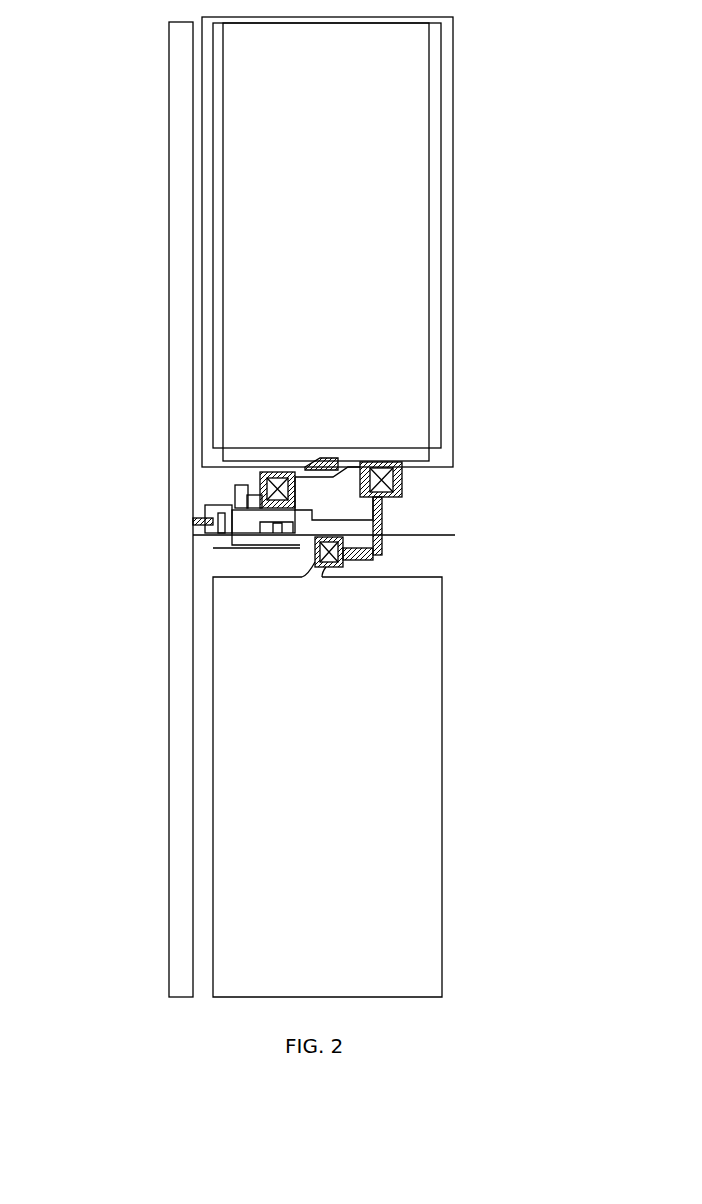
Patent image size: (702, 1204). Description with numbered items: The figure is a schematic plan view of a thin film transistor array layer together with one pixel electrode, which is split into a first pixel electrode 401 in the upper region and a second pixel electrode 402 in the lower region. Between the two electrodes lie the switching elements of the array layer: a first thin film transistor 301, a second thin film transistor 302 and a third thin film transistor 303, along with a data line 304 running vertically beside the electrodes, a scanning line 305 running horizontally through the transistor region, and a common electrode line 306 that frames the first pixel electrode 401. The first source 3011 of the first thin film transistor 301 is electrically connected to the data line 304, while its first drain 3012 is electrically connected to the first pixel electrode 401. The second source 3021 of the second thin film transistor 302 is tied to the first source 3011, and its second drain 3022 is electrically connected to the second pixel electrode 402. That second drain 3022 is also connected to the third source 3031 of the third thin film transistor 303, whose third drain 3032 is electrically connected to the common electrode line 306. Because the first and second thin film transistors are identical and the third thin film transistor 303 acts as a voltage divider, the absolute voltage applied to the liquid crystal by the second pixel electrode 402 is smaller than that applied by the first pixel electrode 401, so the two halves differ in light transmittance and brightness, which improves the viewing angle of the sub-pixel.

The first thin film transistor 301 is at (92, 468).
The first source 3011 is at (205, 532).
The first drain 3012 is at (240, 493).
The second thin film transistor 302 is at (92, 552).
The second source 3021 is at (282, 545).
The second drain 3022 is at (316, 565).
The third thin film transistor 303 is at (537, 478).
The third source 3031 is at (380, 527).
The third drain 3032 is at (375, 512).
The data line 304 is at (187, 330).
The scanning line 305 is at (440, 536).
The common electrode line 306 is at (453, 433).
The first pixel electrode 401 is at (223, 257).
The second pixel electrode 402 is at (215, 703).